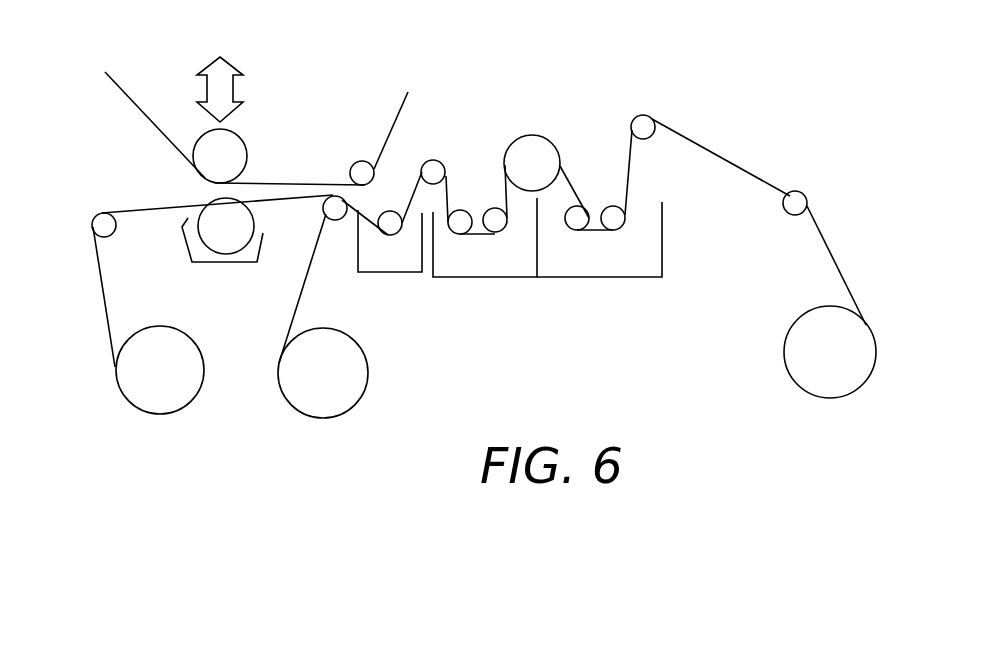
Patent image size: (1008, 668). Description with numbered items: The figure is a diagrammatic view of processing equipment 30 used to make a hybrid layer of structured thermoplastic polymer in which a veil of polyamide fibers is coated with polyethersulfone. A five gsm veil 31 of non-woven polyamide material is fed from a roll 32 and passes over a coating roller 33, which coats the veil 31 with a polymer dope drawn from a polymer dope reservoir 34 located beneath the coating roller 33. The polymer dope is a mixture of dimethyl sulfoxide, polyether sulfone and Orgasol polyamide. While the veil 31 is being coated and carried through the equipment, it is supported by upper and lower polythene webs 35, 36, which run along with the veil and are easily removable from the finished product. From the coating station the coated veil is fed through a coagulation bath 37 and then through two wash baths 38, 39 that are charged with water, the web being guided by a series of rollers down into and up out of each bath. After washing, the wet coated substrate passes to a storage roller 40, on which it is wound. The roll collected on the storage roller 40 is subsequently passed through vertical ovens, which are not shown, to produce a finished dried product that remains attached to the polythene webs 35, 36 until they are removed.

The processing equipment 30 is at (522, 74).
The veil 31 is at (102, 293).
The roll 32 is at (155, 402).
The coating roller 33 is at (238, 216).
The polymer dope reservoir 34 is at (245, 257).
The upper polythene web 35 is at (270, 183).
The lower polythene web 36 is at (295, 307).
The coagulation bath 37 is at (393, 263).
The wash bath 38 is at (482, 263).
The wash bath 39 is at (613, 263).
The storage roller 40 is at (833, 378).